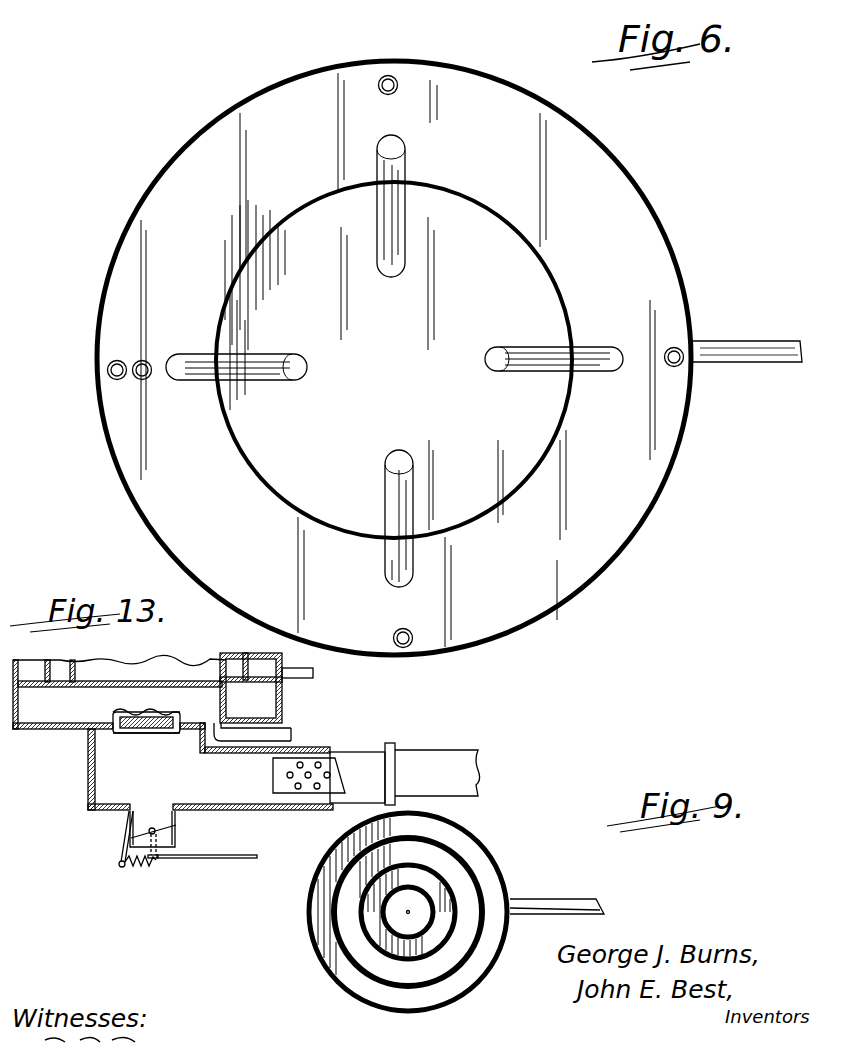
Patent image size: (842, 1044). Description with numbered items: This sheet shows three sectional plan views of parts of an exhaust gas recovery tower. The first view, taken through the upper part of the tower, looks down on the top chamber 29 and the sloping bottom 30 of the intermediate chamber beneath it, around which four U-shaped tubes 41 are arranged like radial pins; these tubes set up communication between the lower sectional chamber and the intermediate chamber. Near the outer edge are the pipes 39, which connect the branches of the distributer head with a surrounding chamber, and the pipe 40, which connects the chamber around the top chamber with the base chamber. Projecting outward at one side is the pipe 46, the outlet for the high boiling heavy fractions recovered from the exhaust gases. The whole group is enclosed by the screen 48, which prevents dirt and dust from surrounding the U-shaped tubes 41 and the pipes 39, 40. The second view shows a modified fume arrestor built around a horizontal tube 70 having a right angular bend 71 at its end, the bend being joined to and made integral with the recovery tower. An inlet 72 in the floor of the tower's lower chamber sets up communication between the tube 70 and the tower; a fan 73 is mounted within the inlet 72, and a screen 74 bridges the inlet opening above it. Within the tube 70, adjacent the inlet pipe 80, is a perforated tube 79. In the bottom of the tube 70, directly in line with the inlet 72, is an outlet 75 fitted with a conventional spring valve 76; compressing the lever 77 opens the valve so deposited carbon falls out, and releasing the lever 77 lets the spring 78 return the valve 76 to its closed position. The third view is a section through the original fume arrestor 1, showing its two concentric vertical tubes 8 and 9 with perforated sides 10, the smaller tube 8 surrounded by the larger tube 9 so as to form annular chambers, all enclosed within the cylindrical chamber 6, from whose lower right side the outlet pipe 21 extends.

In FIG. 6, the screen 48 is at (690, 242).
In FIG. 6, the top chamber 29 is at (520, 462).
In FIG. 6, the inclined bottom 30 is at (329, 335).
In FIG. 6, the U-shaped tubes 41 is at (393, 173).
In FIG. 6, the pipes 39 is at (398, 78).
In FIG. 6, the pipe 40 is at (145, 380).
In FIG. 6, the pipe 46 is at (765, 351).
In FIG. 13, the right angular bend 71 is at (92, 798).
In FIG. 13, the inlet 72 is at (180, 720).
In FIG. 13, the fan 73 is at (115, 733).
In FIG. 13, the screen 74 is at (150, 712).
In FIG. 13, the horizontal tube 70 is at (346, 757).
In FIG. 13, the inlet pipe 80 is at (443, 762).
In FIG. 13, the perforated tube 79 is at (310, 793).
In FIG. 13, the outlet 75 is at (142, 813).
In FIG. 13, the spring valve 76 is at (176, 828).
In FIG. 13, the lever 77 is at (223, 858).
In FIG. 13, the spring 78 is at (146, 862).
In FIG. 9, the cylindrical chamber 6 is at (487, 840).
In FIG. 9, the fume arrestor 1 is at (337, 942).
In FIG. 9, the tube 9 is at (452, 938).
In FIG. 9, the perforated sides 10 is at (432, 897).
In FIG. 9, the tube 8 is at (403, 913).
In FIG. 9, the outlet pipe 21 is at (547, 907).